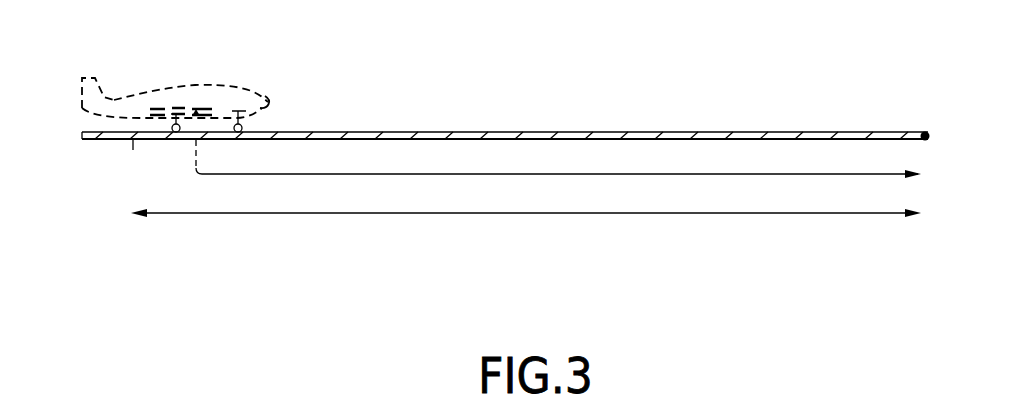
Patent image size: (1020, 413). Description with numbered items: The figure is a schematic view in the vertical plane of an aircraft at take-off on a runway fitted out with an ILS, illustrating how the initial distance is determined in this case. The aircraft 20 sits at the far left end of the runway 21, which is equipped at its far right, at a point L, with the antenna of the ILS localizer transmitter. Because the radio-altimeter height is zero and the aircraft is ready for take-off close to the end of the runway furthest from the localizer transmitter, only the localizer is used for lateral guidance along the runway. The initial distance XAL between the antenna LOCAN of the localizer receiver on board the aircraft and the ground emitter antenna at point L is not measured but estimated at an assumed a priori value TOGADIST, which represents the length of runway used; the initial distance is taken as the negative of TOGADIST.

The aircraft 20 is at (200, 86).
The runway 21 is at (577, 132).
The antenna of the ILS localizer emitter L is at (920, 122).
The antenna of the localizer receiver LOCAN is at (183, 138).
The initial distance XAL is at (558, 160).
The a priori take-off distance value TOGADIST is at (526, 201).